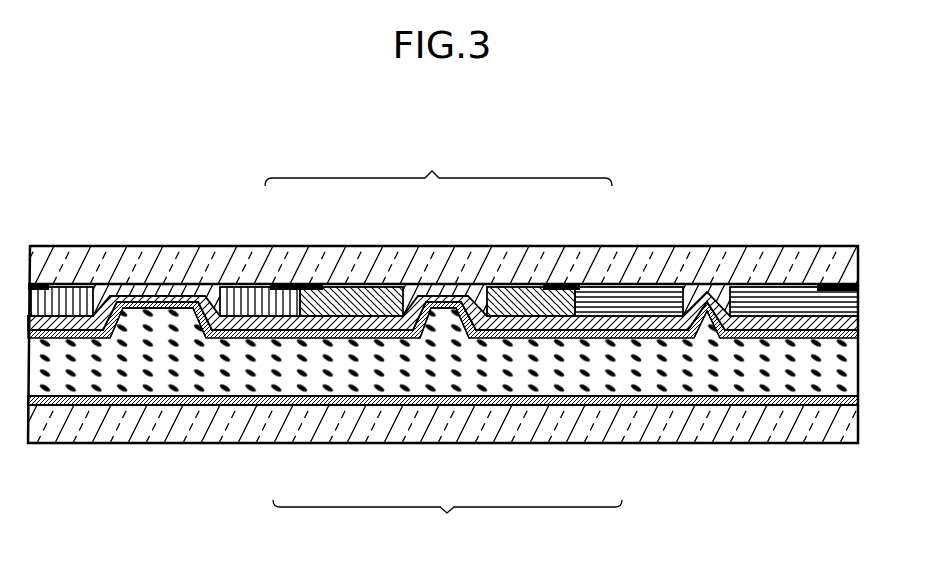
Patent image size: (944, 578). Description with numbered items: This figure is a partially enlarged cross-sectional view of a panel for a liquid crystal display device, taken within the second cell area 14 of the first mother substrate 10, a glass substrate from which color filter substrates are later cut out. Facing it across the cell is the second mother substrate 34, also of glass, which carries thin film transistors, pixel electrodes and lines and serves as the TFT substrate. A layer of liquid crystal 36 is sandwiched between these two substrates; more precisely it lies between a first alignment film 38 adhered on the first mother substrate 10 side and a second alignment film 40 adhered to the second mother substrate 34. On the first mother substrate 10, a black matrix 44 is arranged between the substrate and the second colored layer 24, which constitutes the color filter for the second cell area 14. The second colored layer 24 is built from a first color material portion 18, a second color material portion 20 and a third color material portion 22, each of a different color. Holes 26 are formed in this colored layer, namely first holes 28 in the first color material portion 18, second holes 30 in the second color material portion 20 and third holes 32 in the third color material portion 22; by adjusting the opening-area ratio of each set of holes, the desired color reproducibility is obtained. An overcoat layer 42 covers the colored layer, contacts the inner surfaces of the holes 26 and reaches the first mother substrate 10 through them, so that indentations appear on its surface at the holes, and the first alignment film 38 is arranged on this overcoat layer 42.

The first mother substrate 10 is at (740, 246).
The second cell area 14 is at (674, 186).
The first color material portion 18 is at (268, 286).
The second color material portion 20 is at (407, 286).
The third color material portion 22 is at (627, 297).
The second colored layer 24 is at (438, 164).
The holes 26 is at (447, 524).
The first holes 28 is at (187, 330).
The second holes 30 is at (443, 322).
The third holes 32 is at (707, 330).
The second mother substrate 34 is at (781, 444).
The liquid crystal 36 is at (147, 390).
The first alignment film 38 is at (70, 300).
The second alignment film 40 is at (72, 406).
The overcoat layer 42 is at (157, 296).
The black matrix 44 is at (832, 285).